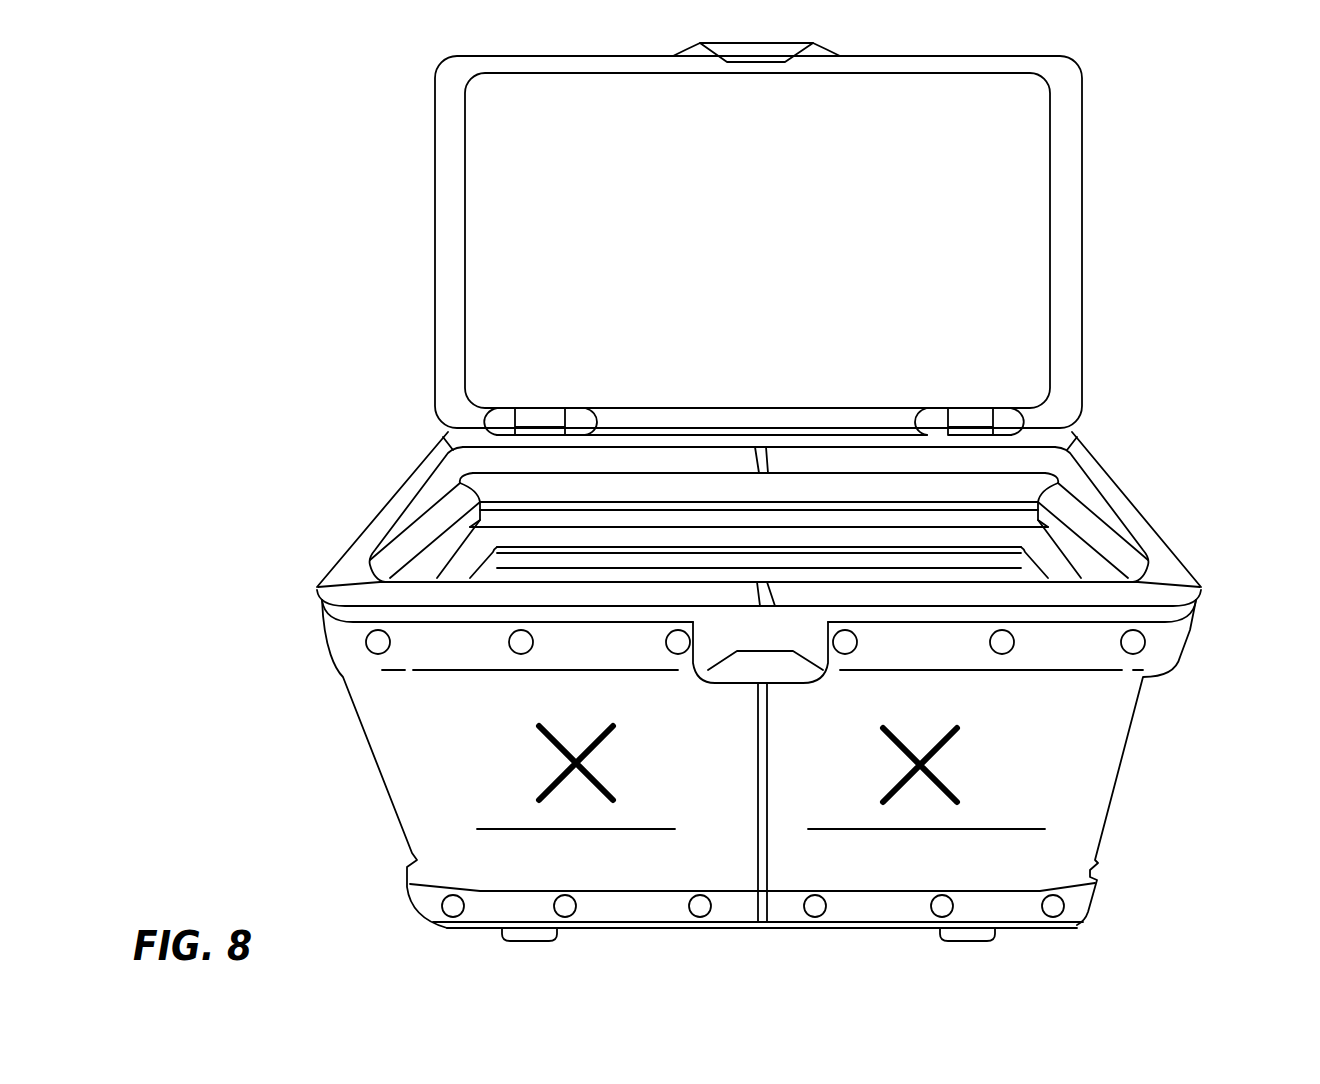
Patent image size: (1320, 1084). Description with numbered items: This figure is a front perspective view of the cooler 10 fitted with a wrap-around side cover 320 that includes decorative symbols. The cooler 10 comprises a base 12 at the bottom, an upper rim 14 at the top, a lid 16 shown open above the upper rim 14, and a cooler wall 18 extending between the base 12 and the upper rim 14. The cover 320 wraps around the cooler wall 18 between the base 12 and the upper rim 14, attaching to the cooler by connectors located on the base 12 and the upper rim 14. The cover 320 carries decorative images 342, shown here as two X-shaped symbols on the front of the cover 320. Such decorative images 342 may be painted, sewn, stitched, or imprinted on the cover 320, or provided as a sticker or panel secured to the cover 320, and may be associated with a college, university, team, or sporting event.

The cooler 10 is at (404, 342).
The base 12 is at (1077, 924).
The upper rim 14 is at (1177, 607).
The lid 16 is at (960, 242).
The cooler wall 18 is at (437, 553).
The cover 320 is at (354, 748).
The decorative images 342 is at (605, 740).